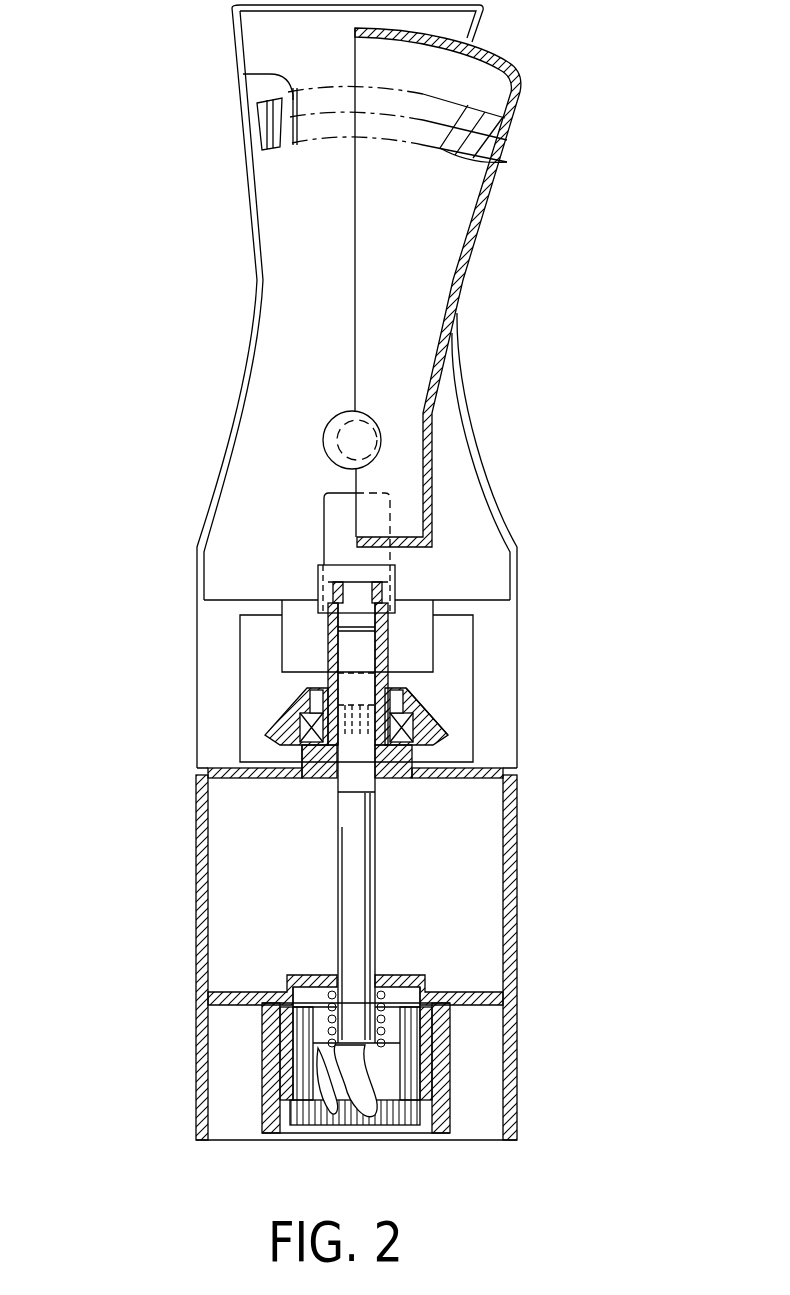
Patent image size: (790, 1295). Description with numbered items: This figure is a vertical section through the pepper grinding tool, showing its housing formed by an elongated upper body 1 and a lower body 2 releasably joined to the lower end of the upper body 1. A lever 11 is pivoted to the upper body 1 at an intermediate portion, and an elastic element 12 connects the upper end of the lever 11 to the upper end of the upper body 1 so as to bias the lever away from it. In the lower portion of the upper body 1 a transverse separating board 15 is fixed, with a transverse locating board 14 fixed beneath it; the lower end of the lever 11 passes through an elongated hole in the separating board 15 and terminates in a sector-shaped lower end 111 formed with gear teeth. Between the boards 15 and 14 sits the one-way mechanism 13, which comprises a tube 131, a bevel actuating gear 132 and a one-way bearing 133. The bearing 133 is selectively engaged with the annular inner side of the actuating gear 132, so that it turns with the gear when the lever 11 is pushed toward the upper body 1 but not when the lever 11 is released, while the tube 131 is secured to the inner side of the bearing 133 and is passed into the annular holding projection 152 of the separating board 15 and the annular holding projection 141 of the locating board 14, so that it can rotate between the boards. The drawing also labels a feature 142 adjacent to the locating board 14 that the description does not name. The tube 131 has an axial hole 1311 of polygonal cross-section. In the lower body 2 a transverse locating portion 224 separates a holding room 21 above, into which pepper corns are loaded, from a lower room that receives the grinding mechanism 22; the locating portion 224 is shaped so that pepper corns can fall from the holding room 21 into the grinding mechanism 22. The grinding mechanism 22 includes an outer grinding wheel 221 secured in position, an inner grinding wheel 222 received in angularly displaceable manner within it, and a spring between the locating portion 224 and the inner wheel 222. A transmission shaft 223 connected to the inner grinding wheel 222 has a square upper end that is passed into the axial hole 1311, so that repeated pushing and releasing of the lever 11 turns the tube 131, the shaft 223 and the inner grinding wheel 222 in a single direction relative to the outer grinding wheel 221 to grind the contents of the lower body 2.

The upper body 1 is at (238, 283).
The lever 11 is at (482, 238).
The sector-shaped lower end 111 is at (437, 710).
The elastic element 12 is at (243, 74).
The one-way mechanism 13 is at (262, 675).
The tube 131 is at (392, 640).
The axial hole 1311 is at (372, 668).
The actuating gear 132 is at (287, 713).
The one-way bearing 133 is at (300, 748).
The transverse locating board 14 is at (425, 778).
The annular holding projection 141 is at (312, 758).
The coupling 142 is at (335, 795).
The transverse separating board 15 is at (262, 605).
The annular holding projection 152 is at (318, 565).
The lower body 2 is at (525, 970).
The holding room 21 is at (225, 933).
The grinding mechanism 22 is at (472, 1060).
The outer grinding wheel 221 is at (280, 1067).
The inner grinding wheel 222 is at (307, 1077).
The transmission shaft 223 is at (357, 917).
The transverse locating portion 224 is at (303, 973).